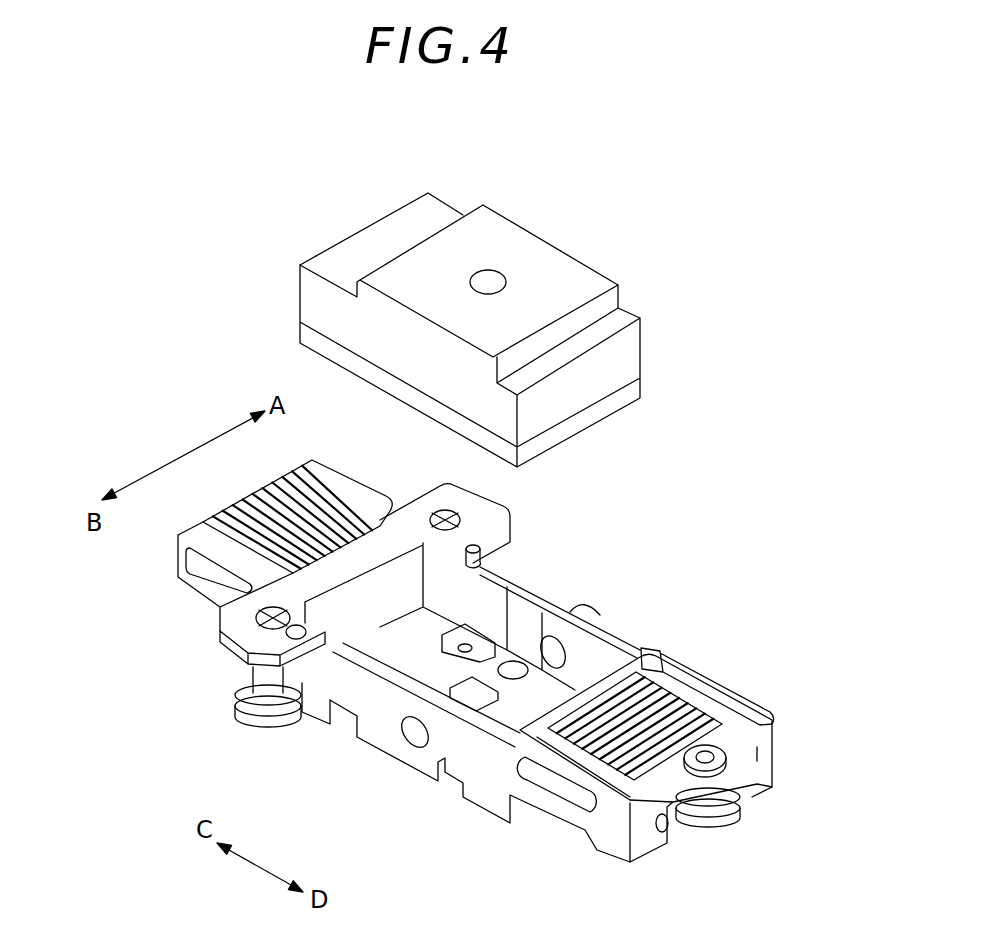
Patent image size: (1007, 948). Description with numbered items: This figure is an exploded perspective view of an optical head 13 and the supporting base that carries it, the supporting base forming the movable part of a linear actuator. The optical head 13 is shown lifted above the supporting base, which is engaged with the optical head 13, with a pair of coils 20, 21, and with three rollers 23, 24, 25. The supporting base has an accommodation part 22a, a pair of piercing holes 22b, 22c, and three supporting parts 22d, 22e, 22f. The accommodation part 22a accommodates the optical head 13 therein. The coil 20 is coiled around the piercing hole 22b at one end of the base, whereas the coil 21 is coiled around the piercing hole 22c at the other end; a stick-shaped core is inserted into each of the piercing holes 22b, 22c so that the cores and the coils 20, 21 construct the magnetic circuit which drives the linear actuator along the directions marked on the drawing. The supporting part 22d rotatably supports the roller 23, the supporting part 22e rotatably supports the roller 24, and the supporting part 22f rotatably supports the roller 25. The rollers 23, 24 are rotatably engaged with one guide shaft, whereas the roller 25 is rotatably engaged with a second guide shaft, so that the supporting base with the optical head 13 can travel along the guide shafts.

The optical head 13 is at (648, 345).
The coil 20 is at (266, 512).
The coil 21 is at (683, 710).
The accommodation part 22a is at (585, 650).
The piercing hole 22b is at (205, 575).
The piercing hole 22c is at (578, 800).
The supporting part 22d is at (233, 668).
The supporting part 22e is at (510, 537).
The supporting part 22f is at (695, 802).
The roller 23 is at (232, 722).
The roller 24 is at (512, 573).
The roller 25 is at (740, 815).